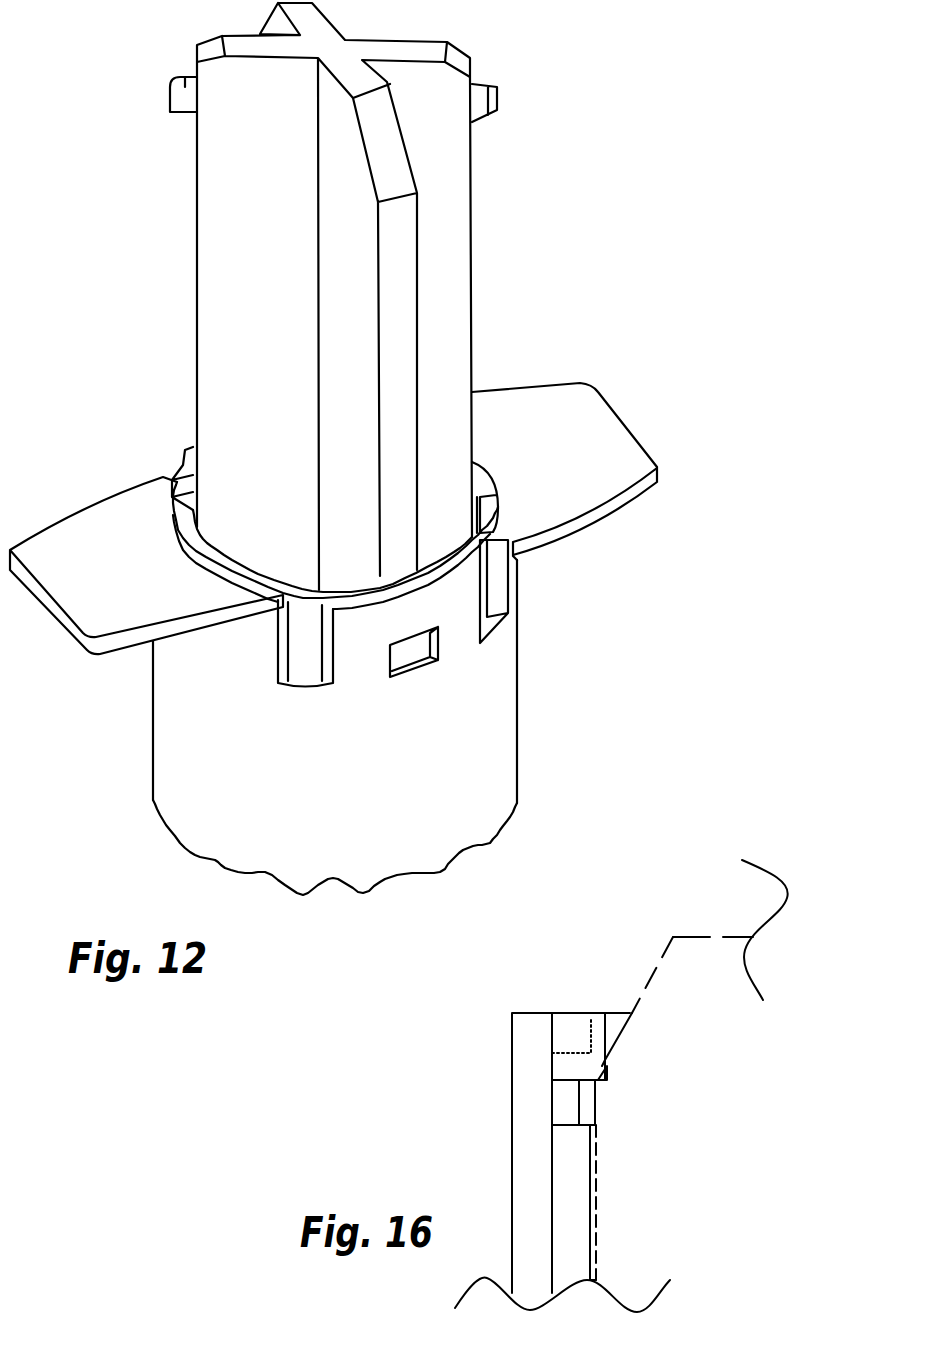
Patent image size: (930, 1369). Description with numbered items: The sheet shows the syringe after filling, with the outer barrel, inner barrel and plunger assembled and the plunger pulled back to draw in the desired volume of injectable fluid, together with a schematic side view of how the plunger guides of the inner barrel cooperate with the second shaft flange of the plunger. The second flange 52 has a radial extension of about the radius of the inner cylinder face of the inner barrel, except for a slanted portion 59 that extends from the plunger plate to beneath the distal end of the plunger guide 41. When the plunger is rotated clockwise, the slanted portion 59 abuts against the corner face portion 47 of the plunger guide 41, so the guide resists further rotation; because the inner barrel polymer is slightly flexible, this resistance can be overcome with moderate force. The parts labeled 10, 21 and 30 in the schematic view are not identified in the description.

The plug body 10 is at (530, 1180).
The guide rib 21 is at (565, 1105).
The slot 30 is at (567, 1223).
The plunger guide 41 is at (562, 1033).
The corner face portion 47 is at (607, 1075).
The second flange 52 is at (713, 1010).
The slanted portion 59 is at (652, 977).